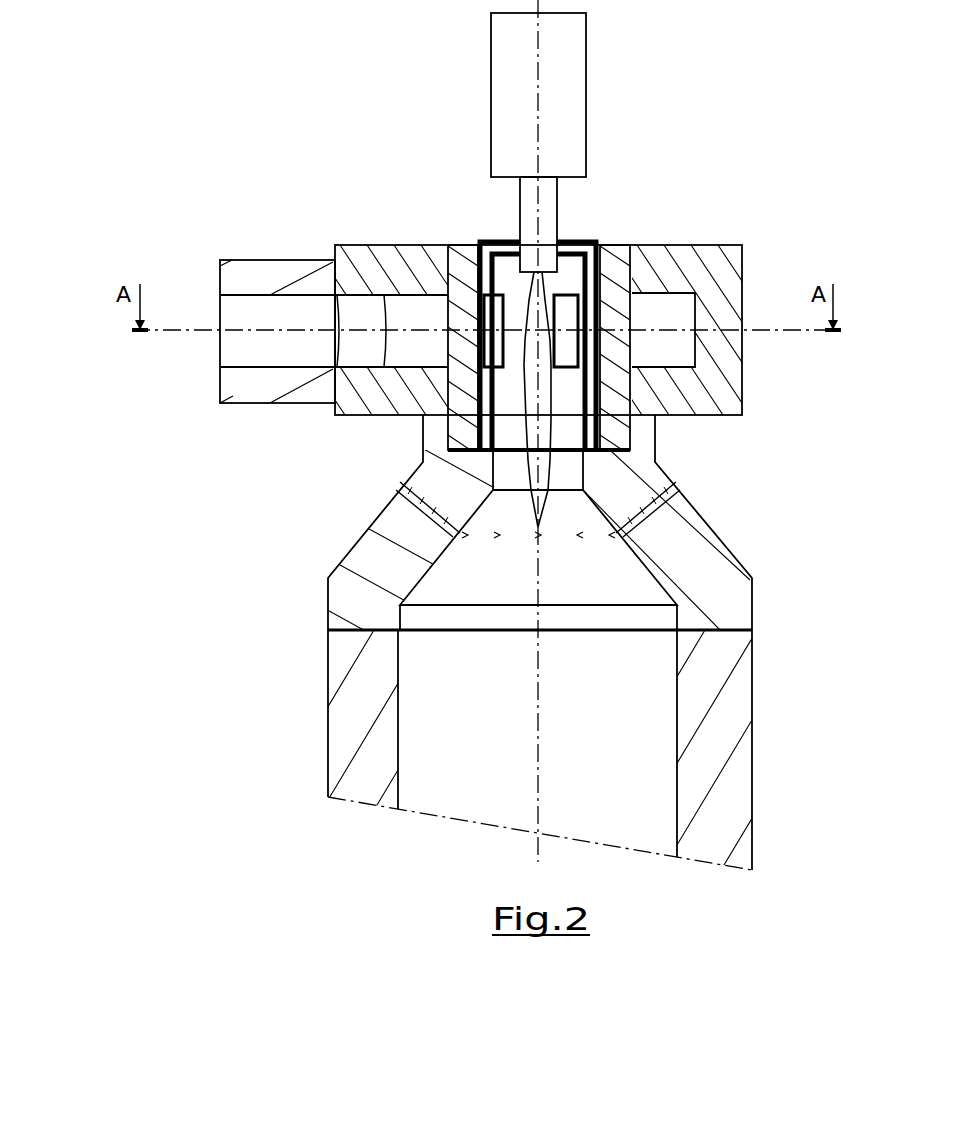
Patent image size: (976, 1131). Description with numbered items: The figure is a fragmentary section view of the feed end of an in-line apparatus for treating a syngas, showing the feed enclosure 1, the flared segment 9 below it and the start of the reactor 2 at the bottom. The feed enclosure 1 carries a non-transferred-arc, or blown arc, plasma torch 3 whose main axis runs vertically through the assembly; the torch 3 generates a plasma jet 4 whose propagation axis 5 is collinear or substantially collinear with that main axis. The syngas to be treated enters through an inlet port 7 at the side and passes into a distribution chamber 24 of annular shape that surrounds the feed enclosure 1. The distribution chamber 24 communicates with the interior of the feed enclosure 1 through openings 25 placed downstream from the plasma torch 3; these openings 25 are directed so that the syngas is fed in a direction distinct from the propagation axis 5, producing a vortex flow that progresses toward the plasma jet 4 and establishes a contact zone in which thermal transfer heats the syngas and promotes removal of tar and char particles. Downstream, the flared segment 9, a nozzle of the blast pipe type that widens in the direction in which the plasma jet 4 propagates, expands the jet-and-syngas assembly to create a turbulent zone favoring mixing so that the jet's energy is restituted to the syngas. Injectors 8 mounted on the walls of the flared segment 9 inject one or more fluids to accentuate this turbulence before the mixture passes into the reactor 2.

The feed enclosure 1 is at (92, 265).
The reactor 2 is at (92, 635).
The plasma torch 3 is at (558, 205).
The plasma jet 4 is at (549, 474).
The propagation axis 5 is at (541, 690).
The inlet port 7 is at (220, 298).
The injectors 8 is at (398, 489).
The flared segment 9 is at (92, 425).
The distribution chamber 24 is at (745, 407).
The openings 25 is at (598, 330).